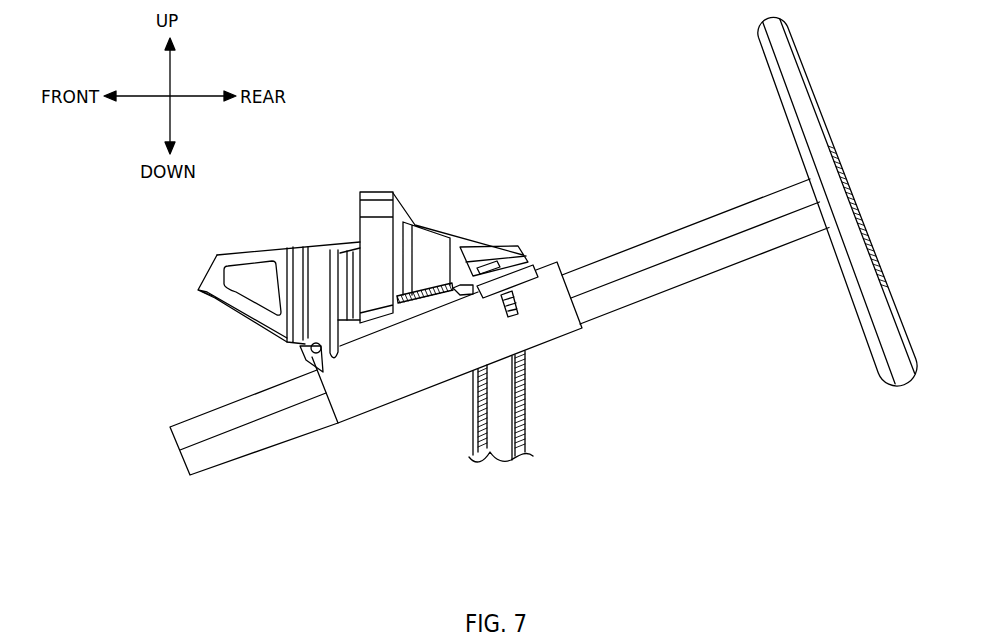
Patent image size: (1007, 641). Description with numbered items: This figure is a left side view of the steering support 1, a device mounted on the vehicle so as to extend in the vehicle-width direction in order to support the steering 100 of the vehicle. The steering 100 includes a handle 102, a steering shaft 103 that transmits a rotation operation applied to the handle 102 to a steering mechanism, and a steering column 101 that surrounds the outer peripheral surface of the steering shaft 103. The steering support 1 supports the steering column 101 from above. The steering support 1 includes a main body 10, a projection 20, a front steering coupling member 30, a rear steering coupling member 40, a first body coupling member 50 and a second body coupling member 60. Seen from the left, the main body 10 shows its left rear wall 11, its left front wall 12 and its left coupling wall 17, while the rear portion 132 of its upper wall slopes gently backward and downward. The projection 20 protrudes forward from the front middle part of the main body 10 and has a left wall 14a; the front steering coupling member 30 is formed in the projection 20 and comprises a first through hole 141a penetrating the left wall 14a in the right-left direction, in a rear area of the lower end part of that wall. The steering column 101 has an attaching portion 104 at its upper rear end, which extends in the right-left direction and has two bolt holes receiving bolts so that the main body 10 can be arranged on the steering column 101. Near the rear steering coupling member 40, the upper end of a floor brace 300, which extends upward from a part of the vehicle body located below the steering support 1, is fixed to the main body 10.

The steering support 1 is at (379, 106).
The main body 10 is at (446, 181).
The left rear wall 11 is at (428, 268).
The left front wall 12 is at (352, 248).
The left wall 14a is at (210, 294).
The left coupling wall 17 is at (462, 248).
The projection 20 is at (262, 223).
The front steering coupling member 30 is at (307, 357).
The rear steering coupling member 40 is at (498, 311).
The first body coupling member 50 is at (209, 255).
The actuator 60 is at (395, 181).
The steering 100 is at (654, 52).
The steering column 101 is at (557, 347).
The handle 102 is at (897, 386).
The steering shaft 103 is at (700, 284).
The attaching portion 104 is at (556, 240).
The rear portion 132 is at (471, 252).
The first through hole 141a is at (322, 348).
The floor brace 300 is at (523, 433).